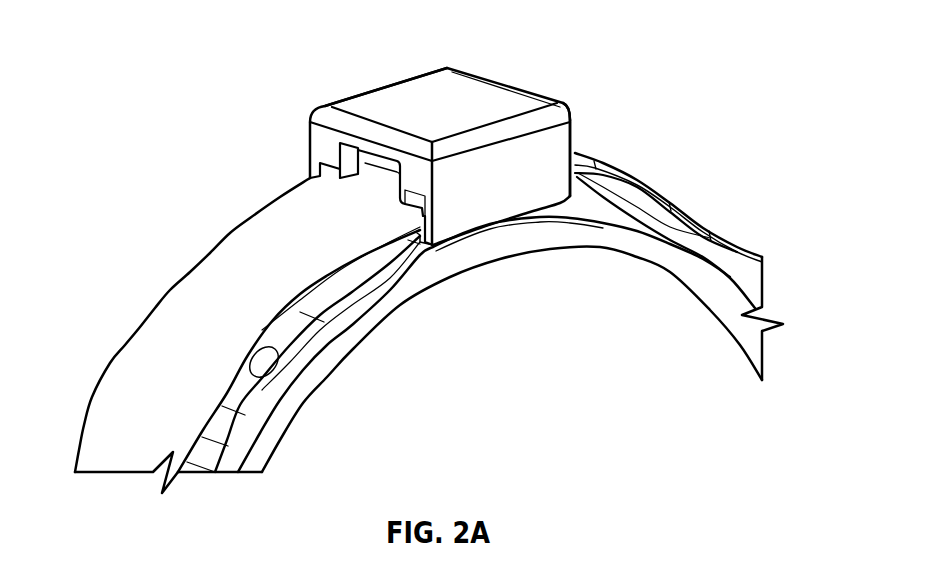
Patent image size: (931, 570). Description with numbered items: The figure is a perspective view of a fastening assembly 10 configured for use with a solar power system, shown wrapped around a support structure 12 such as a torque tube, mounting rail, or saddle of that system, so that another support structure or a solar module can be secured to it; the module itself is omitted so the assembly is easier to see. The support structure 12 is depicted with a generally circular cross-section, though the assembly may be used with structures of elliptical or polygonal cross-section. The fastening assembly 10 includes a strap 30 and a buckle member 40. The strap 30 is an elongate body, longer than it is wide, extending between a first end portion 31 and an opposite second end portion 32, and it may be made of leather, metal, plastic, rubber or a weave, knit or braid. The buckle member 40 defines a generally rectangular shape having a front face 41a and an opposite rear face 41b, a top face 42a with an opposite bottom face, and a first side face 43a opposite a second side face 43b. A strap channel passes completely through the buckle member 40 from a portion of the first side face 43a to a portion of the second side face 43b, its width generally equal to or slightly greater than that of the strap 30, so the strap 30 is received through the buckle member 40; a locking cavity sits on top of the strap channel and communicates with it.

The fastening assembly 10 is at (133, 68).
The support structure 12 is at (527, 237).
The strap 30 is at (733, 247).
The first end portion 31 is at (413, 243).
The second end portion 32 is at (197, 273).
The buckle member 40 is at (453, 68).
The front face 41a is at (570, 143).
The rear face 41b is at (381, 76).
The top face 42a is at (477, 90).
The first side face 43a is at (575, 99).
The second side face 43b is at (320, 145).